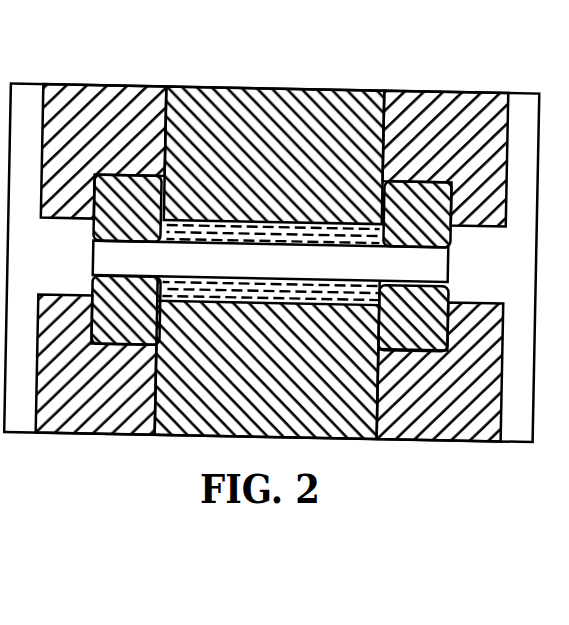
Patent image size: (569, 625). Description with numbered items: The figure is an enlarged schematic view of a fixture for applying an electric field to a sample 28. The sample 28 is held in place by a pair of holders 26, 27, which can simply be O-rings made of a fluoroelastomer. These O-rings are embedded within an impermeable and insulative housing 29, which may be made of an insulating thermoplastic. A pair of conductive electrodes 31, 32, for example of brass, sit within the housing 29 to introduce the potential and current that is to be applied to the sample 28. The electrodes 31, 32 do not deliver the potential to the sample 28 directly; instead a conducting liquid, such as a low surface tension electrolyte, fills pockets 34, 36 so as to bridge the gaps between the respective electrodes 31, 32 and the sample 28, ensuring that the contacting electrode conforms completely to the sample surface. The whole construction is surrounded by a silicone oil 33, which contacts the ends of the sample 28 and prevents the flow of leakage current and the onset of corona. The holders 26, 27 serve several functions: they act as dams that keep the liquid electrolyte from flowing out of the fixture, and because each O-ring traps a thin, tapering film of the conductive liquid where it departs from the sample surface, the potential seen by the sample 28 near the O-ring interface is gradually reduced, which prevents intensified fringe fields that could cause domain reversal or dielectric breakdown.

The holder 26 is at (102, 180).
The holder 27 is at (133, 332).
The sample 28 is at (277, 259).
The housing 29 is at (440, 132).
The conductive electrode 31 is at (267, 128).
The conductive electrode 32 is at (358, 417).
The silicone oil 33 is at (52, 256).
The pocket 34 is at (190, 232).
The pocket 36 is at (350, 286).